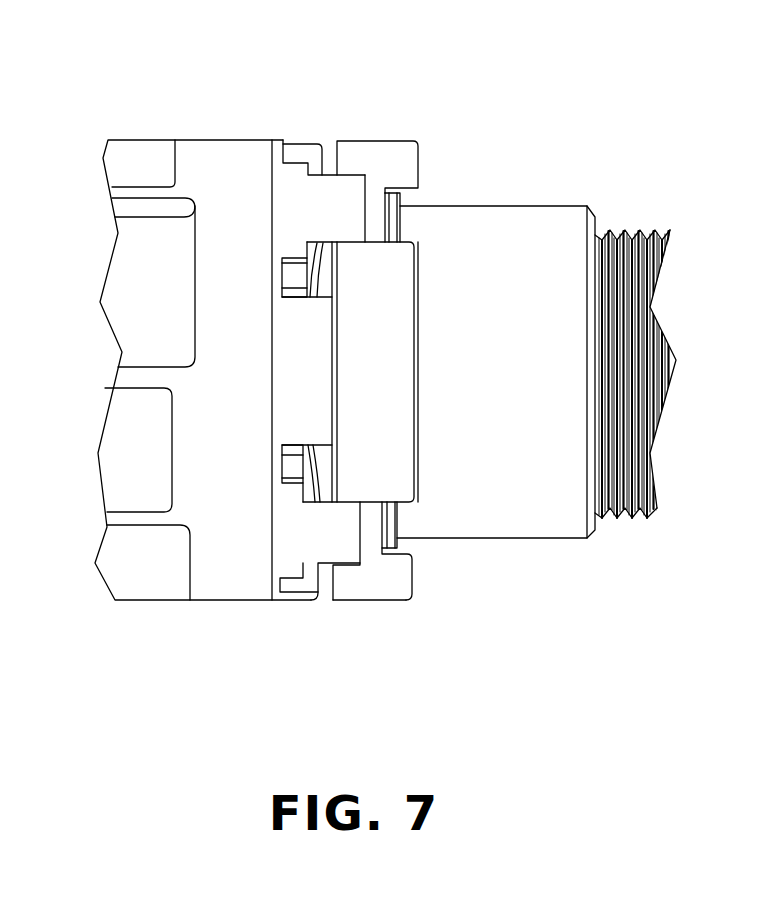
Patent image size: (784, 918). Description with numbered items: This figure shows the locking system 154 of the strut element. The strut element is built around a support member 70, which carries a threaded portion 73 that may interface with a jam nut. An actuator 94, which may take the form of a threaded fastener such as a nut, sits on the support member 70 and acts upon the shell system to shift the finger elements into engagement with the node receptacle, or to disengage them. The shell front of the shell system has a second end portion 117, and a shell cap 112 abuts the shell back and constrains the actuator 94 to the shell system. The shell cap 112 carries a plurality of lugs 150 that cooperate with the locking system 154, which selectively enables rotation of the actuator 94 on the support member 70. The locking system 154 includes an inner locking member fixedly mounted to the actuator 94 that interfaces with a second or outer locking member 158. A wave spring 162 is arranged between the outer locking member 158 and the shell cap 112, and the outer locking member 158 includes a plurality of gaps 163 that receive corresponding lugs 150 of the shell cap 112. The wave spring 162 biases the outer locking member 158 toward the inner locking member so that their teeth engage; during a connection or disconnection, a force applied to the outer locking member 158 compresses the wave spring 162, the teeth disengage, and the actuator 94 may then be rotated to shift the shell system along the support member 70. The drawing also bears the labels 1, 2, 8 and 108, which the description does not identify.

The flange of locking ring 1 is at (393, 153).
The seal ring 2 is at (308, 241).
The seal member 8 is at (288, 522).
The support member 70 is at (656, 581).
The threaded portion 73 is at (640, 231).
The actuator 94 is at (541, 574).
The gripping nut body 108 is at (142, 629).
The shell cap 112 is at (297, 624).
The second end portion 117 is at (260, 606).
The lugs 150 is at (328, 552).
The locking system 154 is at (418, 629).
The second locking member 158 is at (381, 461).
The wave spring 162 is at (329, 175).
The gaps 163 is at (371, 504).